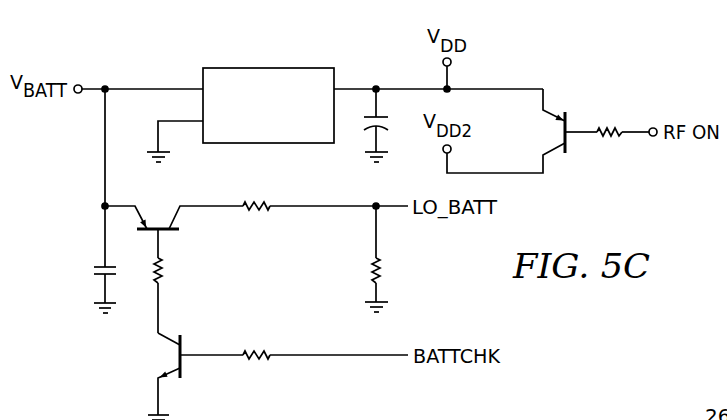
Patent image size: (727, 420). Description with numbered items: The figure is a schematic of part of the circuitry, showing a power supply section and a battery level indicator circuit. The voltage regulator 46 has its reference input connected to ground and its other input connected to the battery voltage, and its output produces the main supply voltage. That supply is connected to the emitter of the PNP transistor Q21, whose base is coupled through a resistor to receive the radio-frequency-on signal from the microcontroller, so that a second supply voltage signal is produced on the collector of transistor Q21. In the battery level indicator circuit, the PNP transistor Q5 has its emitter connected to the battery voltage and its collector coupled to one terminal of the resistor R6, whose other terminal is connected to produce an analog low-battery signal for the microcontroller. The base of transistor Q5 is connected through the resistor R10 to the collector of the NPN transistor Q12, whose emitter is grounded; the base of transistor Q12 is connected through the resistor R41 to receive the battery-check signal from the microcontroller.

The voltage regulator 46 is at (267, 68).
The PNP transistor Q5 is at (174, 222).
The NPN transistor Q12 is at (183, 374).
The PNP transistor Q21 is at (552, 121).
The resistor R6 is at (324, 231).
The resistor R10 is at (179, 270).
The resistor R41 is at (255, 343).